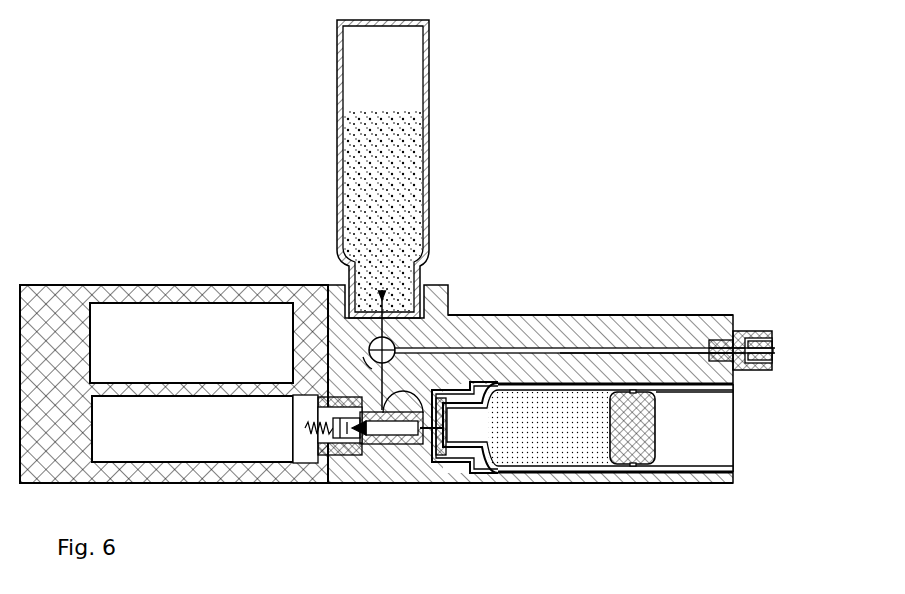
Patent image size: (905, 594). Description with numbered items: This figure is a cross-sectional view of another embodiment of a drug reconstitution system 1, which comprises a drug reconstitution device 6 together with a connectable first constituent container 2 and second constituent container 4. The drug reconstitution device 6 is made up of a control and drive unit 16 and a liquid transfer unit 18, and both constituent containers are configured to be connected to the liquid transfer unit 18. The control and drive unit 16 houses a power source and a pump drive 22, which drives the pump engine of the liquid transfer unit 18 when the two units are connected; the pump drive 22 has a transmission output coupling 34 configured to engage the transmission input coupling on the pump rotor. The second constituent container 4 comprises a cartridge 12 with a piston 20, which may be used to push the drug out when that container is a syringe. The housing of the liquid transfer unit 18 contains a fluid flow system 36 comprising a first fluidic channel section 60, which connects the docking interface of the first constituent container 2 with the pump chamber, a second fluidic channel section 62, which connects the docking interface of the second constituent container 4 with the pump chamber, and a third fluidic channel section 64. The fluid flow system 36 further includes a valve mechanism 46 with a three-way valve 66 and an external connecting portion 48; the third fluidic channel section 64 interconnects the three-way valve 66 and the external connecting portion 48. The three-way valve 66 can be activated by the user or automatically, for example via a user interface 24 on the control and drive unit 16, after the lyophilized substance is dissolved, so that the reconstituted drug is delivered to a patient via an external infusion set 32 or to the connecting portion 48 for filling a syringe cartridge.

The drug reconstitution system 1 is at (420, 295).
The first constituent container 2 is at (325, 138).
The second constituent container 4 is at (740, 452).
The drug reconstitution device 6 is at (487, 263).
The cartridge 12 is at (722, 386).
The control and drive unit 16 is at (222, 488).
The liquid transfer unit 18 is at (407, 490).
The piston 20 is at (642, 450).
The pump drive 22 is at (280, 477).
The user interface 24 is at (157, 350).
The infusion set 32 is at (772, 345).
The transmission output coupling 34 is at (365, 440).
The fluid flow system 36 is at (662, 335).
The valve mechanism 46 is at (410, 337).
The external connecting portion 48 is at (752, 320).
The first fluidic channel section 60 is at (432, 458).
The second fluidic channel section 62 is at (480, 463).
The third fluidic channel section 64 is at (629, 349).
The three-way valve 66 is at (420, 352).